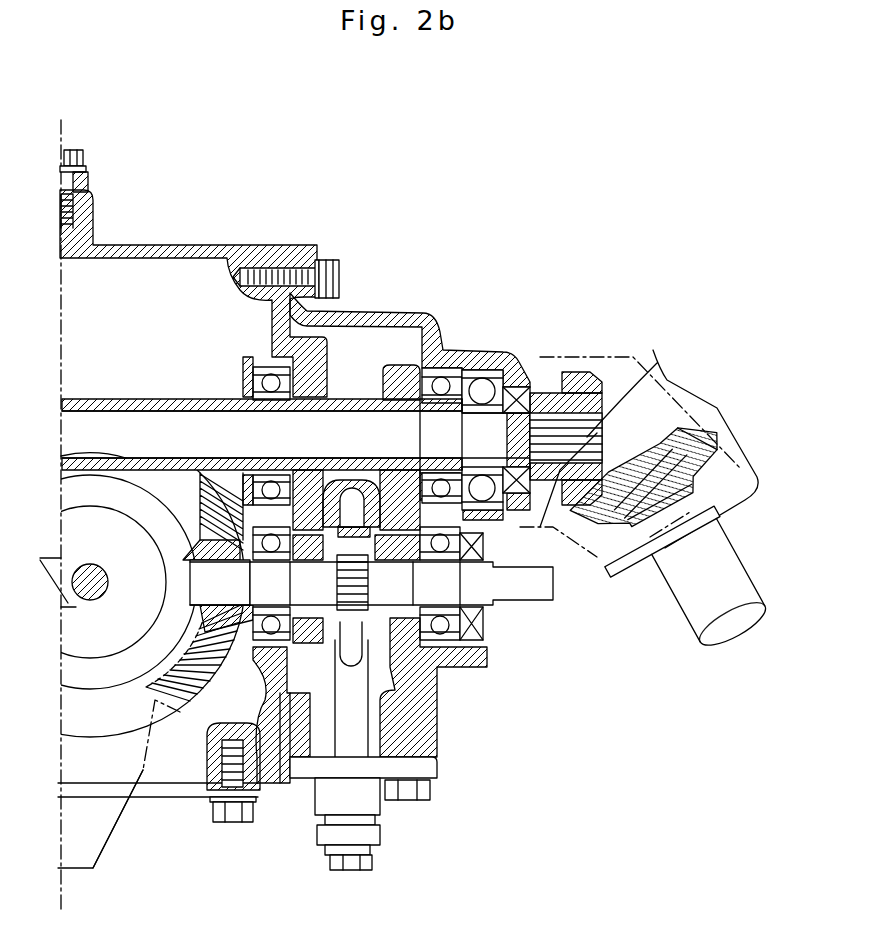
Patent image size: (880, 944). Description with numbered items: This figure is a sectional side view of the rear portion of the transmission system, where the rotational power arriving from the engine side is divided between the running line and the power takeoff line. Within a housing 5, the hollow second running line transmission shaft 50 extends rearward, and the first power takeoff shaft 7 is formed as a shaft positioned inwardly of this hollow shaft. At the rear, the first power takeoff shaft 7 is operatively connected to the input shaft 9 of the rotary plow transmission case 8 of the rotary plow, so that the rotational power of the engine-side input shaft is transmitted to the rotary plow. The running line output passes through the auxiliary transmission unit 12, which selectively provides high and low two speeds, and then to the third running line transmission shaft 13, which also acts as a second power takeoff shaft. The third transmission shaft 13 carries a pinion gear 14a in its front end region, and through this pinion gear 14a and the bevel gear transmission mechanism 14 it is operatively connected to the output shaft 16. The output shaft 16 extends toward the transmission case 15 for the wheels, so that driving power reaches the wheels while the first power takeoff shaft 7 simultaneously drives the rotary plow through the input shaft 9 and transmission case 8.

The housing 5 is at (128, 243).
The auxiliary transmission unit 12 is at (368, 346).
The second running line transmission shaft 50 is at (152, 397).
The first power takeoff shaft 7 is at (597, 440).
The input shaft of rotary plow transmission case 9 is at (655, 523).
The rotary plow transmission case 8 is at (708, 625).
The output shaft 16 is at (98, 573).
The bevel gear transmission mechanism 14 is at (230, 668).
The pinion gear 14a is at (230, 582).
The third running line transmission shaft 13 is at (525, 587).
The transmission case for the wheels 15 is at (143, 770).